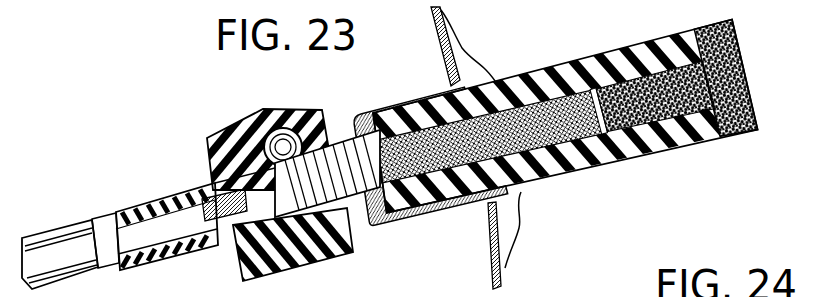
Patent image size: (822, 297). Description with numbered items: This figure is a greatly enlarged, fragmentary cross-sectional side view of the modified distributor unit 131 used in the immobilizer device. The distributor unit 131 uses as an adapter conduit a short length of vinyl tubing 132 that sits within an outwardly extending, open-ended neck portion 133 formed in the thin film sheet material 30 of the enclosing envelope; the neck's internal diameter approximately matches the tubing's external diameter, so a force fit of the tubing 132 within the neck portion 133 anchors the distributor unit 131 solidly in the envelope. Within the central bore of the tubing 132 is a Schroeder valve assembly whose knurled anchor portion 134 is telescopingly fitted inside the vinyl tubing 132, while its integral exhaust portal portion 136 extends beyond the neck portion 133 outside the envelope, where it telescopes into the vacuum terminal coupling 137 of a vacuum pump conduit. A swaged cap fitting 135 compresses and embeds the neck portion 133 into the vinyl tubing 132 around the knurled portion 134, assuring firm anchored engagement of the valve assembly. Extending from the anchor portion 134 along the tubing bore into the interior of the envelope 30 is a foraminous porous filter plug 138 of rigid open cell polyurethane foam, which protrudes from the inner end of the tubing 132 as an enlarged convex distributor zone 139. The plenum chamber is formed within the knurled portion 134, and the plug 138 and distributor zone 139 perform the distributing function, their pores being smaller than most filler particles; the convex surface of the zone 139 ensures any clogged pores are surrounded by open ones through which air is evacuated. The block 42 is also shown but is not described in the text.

The thin film sheet material 30 is at (492, 254).
The body block 42 is at (308, 94).
The modified distributor unit 131 is at (552, 52).
The vinyl tubing 132 is at (636, 160).
The neck portion 133 is at (433, 92).
The knurled anchor portion 134 is at (543, 157).
The swaged cap fitting 135 is at (380, 110).
The exhaust portal portion 136 is at (363, 203).
The vacuum terminal coupling 137 is at (308, 268).
The porous filter plug 138 is at (655, 100).
The convex distributor zone 139 is at (735, 36).